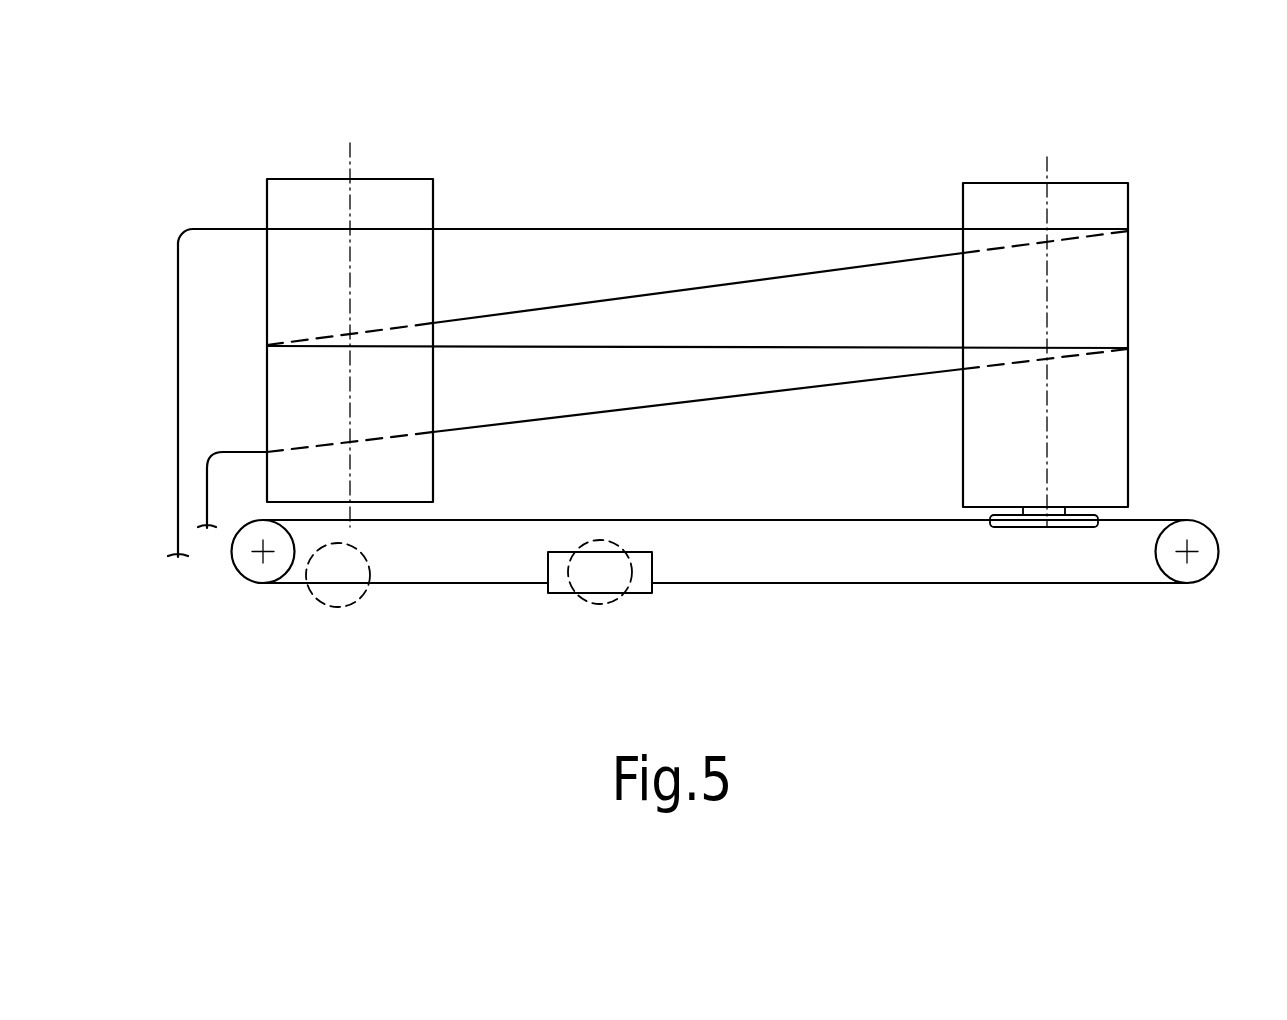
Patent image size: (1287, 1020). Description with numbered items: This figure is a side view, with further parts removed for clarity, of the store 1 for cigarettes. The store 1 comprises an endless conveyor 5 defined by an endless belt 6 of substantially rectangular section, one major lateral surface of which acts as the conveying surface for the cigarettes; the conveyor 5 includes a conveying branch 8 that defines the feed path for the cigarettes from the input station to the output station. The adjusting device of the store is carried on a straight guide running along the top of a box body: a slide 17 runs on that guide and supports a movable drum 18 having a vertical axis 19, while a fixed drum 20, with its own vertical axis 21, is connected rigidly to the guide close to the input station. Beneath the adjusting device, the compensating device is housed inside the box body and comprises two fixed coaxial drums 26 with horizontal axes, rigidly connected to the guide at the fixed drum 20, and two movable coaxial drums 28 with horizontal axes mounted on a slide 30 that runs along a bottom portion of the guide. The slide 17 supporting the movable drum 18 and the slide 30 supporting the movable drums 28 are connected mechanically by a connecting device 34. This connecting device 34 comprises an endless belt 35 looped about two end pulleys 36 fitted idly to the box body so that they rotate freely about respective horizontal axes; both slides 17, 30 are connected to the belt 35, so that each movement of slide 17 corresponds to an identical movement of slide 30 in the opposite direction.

The store 1 is at (656, 190).
The endless conveyor 5 is at (821, 220).
The endless belt 6 is at (176, 483).
The conveying branch 8 is at (566, 208).
The slide 17 is at (1028, 523).
The movable drum 18 is at (1122, 201).
The vertical axis 19 is at (1053, 168).
The fixed drum 20 is at (308, 188).
The vertical axis 21 is at (355, 158).
The fixed coaxial drums 26 is at (340, 614).
The movable coaxial drums 28 is at (586, 614).
The slide 30 is at (643, 589).
The connecting device 34 is at (940, 604).
The endless belt 35 is at (820, 586).
The end pulleys 36 is at (252, 573).